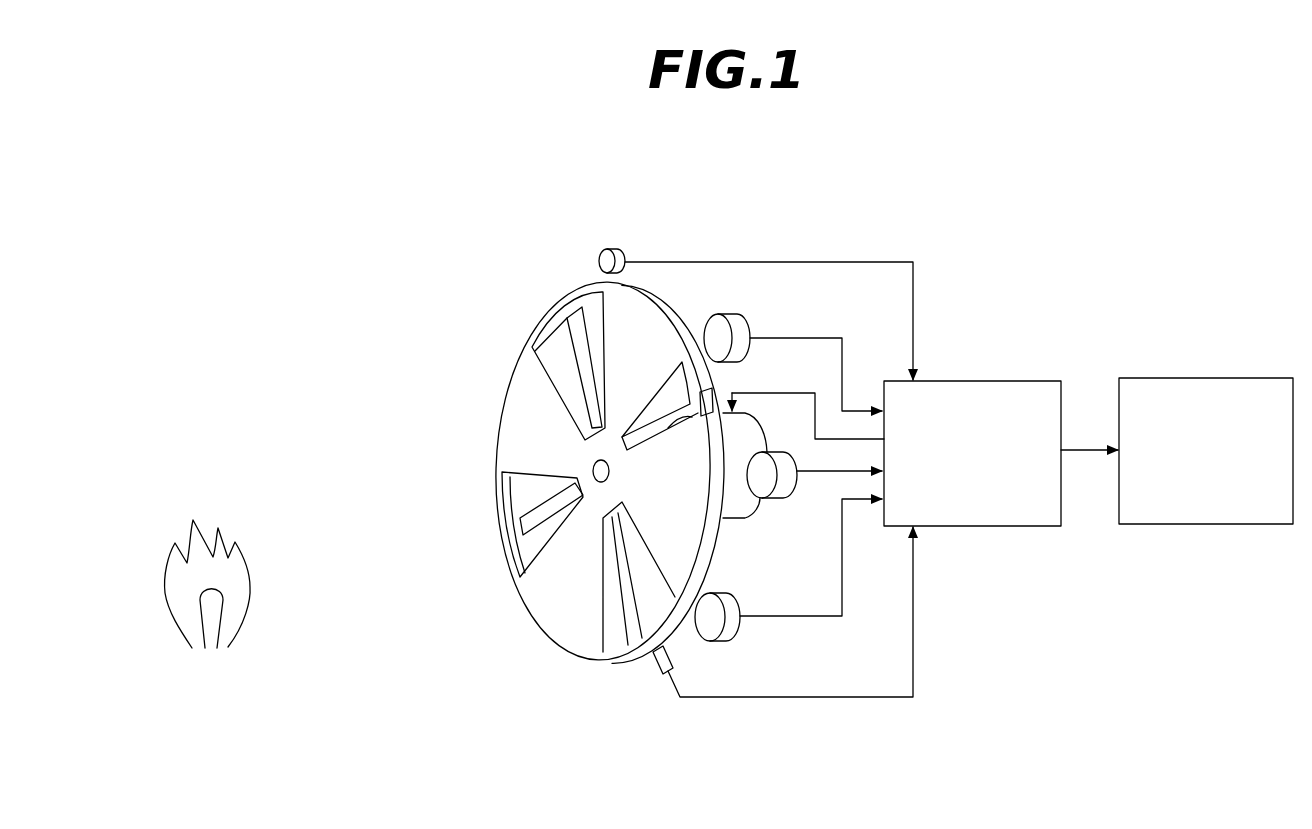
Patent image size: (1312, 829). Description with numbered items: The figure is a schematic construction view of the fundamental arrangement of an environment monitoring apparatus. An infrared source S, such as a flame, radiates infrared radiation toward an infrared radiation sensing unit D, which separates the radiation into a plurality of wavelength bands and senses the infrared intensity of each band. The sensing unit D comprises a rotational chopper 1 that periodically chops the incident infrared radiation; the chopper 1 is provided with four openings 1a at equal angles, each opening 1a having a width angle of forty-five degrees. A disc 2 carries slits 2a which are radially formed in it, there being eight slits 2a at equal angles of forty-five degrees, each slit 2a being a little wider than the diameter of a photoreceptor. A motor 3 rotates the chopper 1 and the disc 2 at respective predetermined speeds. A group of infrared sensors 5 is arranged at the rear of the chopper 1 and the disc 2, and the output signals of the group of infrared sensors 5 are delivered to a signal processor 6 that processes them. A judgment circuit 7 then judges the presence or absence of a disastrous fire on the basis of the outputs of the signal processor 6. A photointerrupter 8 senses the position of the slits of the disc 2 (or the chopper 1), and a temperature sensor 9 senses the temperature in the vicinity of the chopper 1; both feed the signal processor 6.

The rotational chopper 1 is at (552, 643).
The opening 1a is at (605, 632).
The disc 2 is at (718, 550).
The slit 2a is at (634, 640).
The motor 3 is at (760, 513).
The group of infrared sensors 5 is at (747, 312).
The signal processor 6 is at (1018, 526).
The judgment circuit 7 is at (1243, 524).
The photointerrupter 8 is at (672, 652).
The temperature sensor 9 is at (612, 248).
The infrared source S is at (248, 618).
The infrared radiation sensing unit D is at (618, 730).